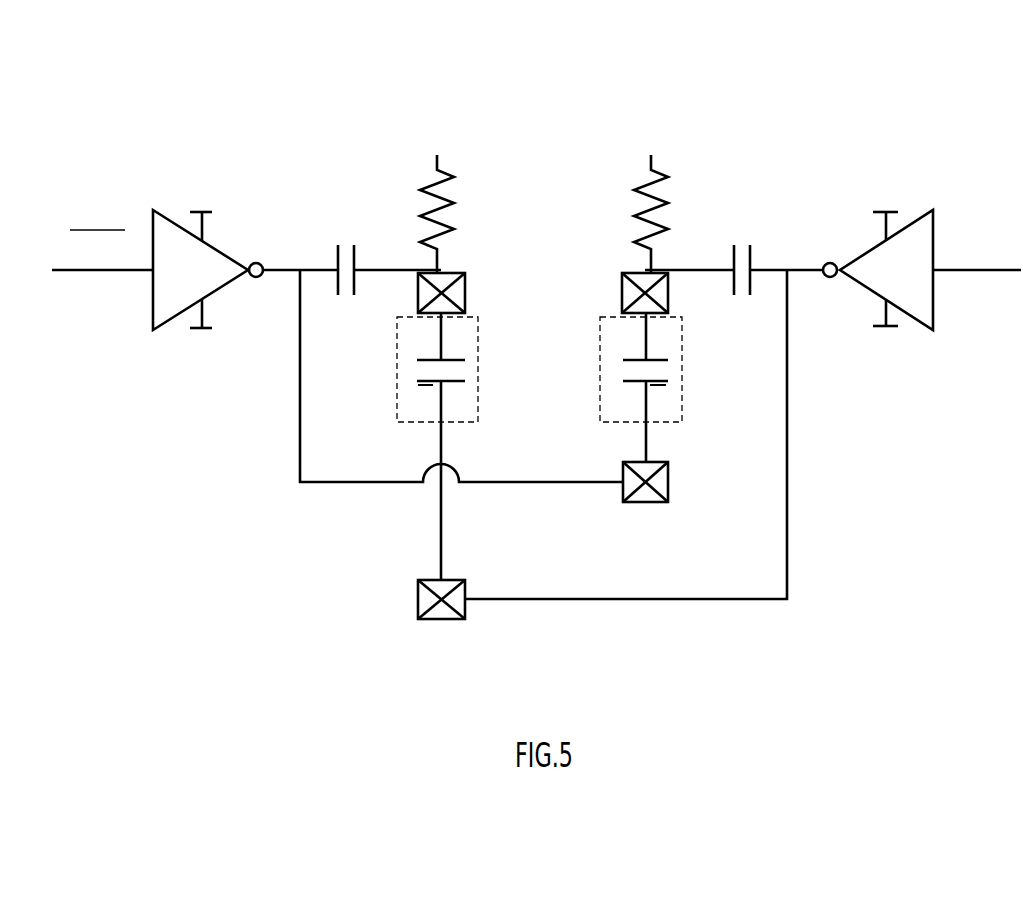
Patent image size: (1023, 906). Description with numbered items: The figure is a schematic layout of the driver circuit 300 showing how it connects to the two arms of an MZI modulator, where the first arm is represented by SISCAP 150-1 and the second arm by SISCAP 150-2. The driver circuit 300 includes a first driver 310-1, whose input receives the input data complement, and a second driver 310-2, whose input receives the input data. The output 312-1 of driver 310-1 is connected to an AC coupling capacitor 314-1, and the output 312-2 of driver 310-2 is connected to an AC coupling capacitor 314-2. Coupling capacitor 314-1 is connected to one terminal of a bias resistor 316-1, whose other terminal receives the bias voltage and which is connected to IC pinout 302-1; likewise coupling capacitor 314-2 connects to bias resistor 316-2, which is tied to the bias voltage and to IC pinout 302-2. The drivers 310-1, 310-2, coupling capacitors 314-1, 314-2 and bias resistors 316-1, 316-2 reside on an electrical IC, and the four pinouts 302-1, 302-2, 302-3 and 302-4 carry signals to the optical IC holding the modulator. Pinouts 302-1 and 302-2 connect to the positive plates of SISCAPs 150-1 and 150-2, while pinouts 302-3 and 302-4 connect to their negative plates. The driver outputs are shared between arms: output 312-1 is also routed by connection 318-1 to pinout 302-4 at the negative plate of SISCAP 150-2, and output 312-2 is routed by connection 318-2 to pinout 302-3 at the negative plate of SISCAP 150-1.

The driver circuit 300 is at (65, 76).
The first driver 310-1 is at (153, 295).
The second driver 310-2 is at (933, 295).
The output of first driver 312-1 is at (282, 272).
The output of second driver 312-2 is at (800, 272).
The AC coupling capacitor 314-1 is at (333, 258).
The AC coupling capacitor 314-2 is at (753, 258).
The bias resistor 316-1 is at (427, 195).
The bias resistor 316-2 is at (660, 198).
The IC pinout 302-1 is at (510, 272).
The IC pinout 302-2 is at (622, 293).
The IC pinout 302-3 is at (418, 600).
The IC pinout 302-4 is at (668, 480).
The SISCAP 150-1 is at (397, 363).
The SISCAP 150-2 is at (682, 363).
The connection 318-1 is at (315, 482).
The connection 318-2 is at (758, 600).